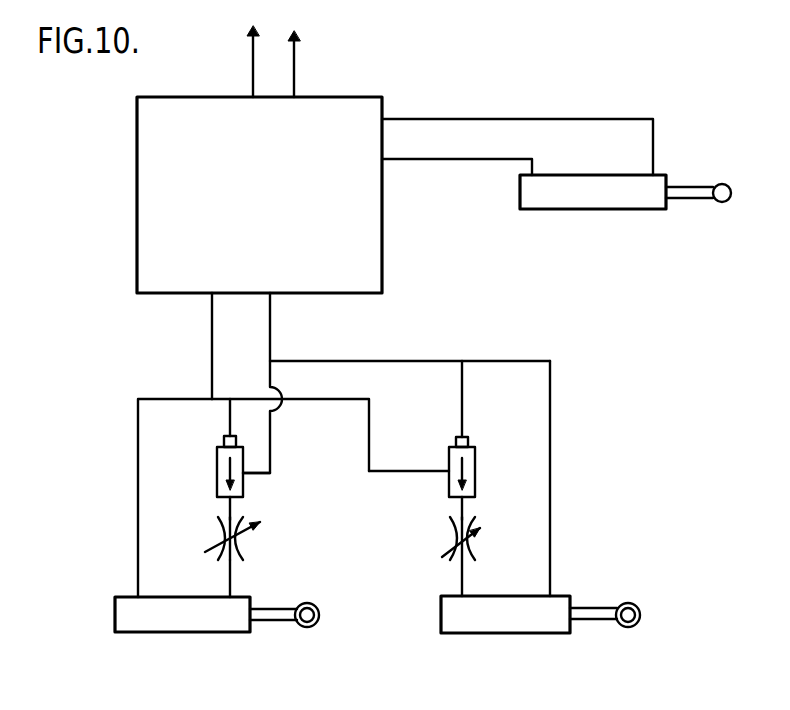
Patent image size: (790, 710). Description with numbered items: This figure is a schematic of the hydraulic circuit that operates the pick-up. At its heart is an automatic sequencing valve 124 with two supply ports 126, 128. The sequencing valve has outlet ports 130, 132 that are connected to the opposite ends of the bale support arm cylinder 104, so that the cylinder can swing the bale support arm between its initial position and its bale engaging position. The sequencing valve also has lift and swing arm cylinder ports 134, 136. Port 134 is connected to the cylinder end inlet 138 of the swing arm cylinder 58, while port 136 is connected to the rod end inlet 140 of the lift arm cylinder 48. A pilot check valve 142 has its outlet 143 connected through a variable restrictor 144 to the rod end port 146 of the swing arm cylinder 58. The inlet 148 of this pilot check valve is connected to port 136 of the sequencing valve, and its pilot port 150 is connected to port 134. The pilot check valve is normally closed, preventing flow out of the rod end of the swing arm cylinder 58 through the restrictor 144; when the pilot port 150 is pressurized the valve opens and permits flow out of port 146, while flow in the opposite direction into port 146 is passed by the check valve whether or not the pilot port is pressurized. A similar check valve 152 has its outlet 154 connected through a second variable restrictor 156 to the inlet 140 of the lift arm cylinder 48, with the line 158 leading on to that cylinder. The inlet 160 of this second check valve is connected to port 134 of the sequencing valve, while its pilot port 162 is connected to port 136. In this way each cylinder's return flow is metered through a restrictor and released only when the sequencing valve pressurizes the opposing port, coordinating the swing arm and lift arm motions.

The automatic sequencing valve 124 is at (145, 200).
The supply port 126 is at (252, 97).
The supply port 128 is at (298, 97).
The outlet port 130 is at (382, 119).
The outlet port 132 is at (382, 160).
The bale support arm cylinder 104 is at (622, 200).
The lift and swing arm cylinder port 134 is at (212, 295).
The lift and swing arm cylinder port 136 is at (272, 296).
The cylinder end inlet 138 is at (130, 597).
The rod end inlet 140 is at (458, 595).
The pilot check valve 142 is at (217, 465).
The outlet 143 is at (223, 500).
The variable restrictor 144 is at (247, 543).
The port 146 is at (235, 595).
The inlet 148 is at (250, 475).
The pilot port 150 is at (224, 437).
The swing arm cylinder 58 is at (182, 632).
The check valve 152 is at (475, 465).
The outlet 154 is at (462, 498).
The variable restrictor 156 is at (472, 548).
The line to cylinder 48 158 is at (552, 593).
The inlet 160 is at (449, 473).
The pilot port 162 is at (456, 438).
The lift arm cylinder 48 is at (507, 633).